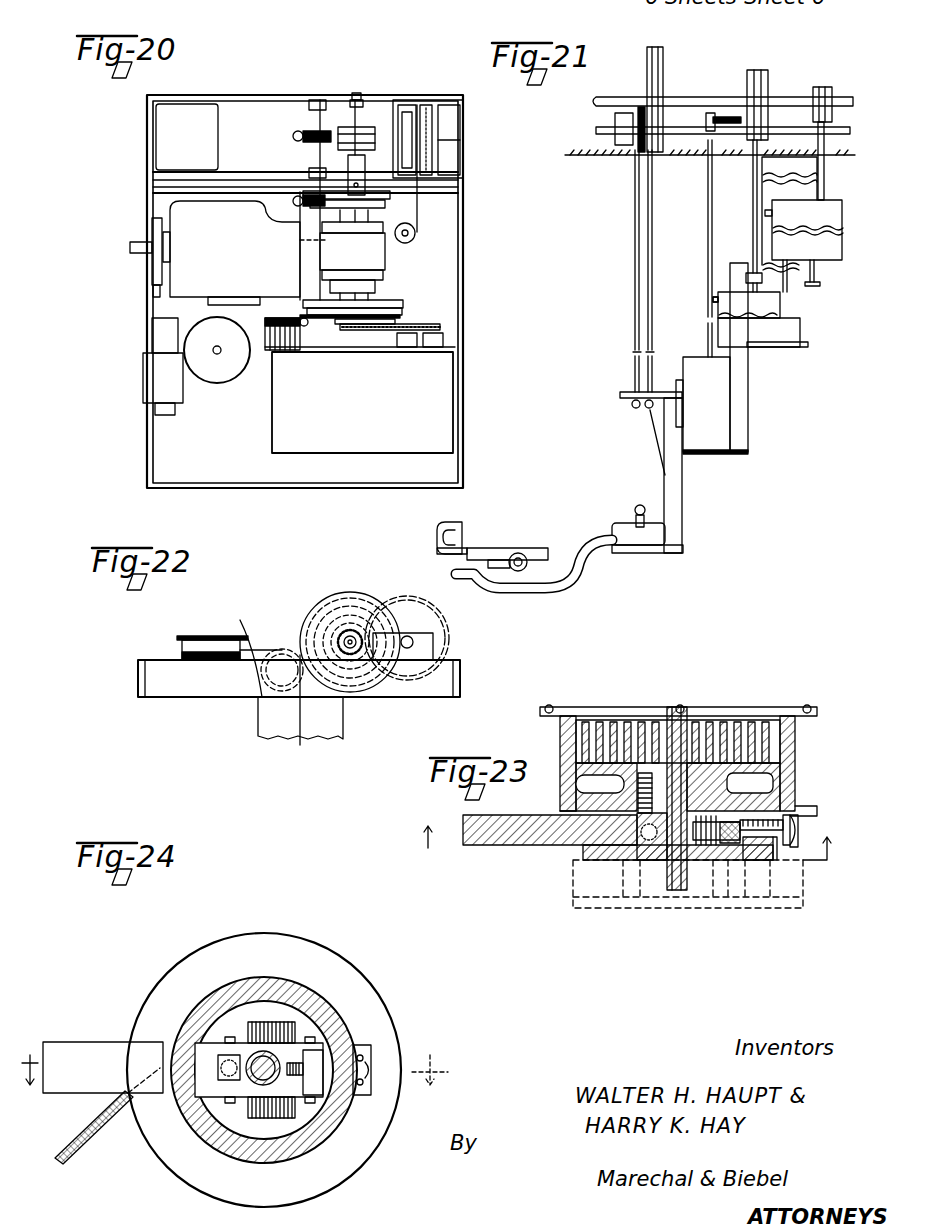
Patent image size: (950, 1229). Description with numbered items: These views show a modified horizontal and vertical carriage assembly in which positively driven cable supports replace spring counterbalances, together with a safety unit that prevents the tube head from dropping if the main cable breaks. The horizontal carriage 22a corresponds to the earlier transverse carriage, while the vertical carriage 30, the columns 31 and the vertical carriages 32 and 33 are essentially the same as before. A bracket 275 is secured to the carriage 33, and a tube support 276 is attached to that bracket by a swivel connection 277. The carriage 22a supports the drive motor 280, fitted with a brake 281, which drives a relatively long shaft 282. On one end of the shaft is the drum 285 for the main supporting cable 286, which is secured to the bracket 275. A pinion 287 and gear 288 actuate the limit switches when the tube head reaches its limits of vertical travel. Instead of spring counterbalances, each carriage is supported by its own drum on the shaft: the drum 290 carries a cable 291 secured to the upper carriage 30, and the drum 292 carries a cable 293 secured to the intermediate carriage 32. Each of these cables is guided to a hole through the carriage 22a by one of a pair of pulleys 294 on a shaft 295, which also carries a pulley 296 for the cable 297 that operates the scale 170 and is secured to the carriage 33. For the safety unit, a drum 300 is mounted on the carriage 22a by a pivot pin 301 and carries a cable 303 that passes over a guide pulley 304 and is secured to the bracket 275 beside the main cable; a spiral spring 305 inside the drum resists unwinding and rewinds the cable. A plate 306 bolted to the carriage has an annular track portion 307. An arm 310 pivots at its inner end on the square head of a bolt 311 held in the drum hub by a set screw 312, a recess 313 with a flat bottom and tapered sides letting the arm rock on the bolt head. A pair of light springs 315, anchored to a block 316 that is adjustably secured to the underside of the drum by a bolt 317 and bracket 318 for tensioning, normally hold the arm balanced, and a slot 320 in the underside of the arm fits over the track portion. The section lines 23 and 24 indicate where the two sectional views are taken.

In FIG. 20, the horizontal carriage 22a is at (160, 450).
In FIG. 22, the horizontal carriage 22a is at (160, 685).
In FIG. 23, the horizontal carriage 22a is at (573, 895).
In FIG. 24, the section line 23— 23 is at (244, 1090).
In FIG. 23, the section line 24— 24 is at (615, 854).
In FIG. 21, the vertical carriage 30 is at (795, 322).
In FIG. 22, the vertical carriage 30 is at (258, 730).
In FIG. 21, the column 31 is at (768, 194).
In FIG. 21, the intermediate vertical carriage 32 is at (740, 405).
In FIG. 21, the carriage 33 is at (700, 452).
In FIG. 20, the scale 170 is at (442, 105).
In FIG. 21, the bracket 275 is at (620, 396).
In FIG. 21, the tube support 276 is at (590, 588).
In FIG. 21, the swivel connection 277 is at (648, 548).
In FIG. 20, the drive motor 280 is at (178, 216).
In FIG. 20, the brake 281 is at (150, 263).
In FIG. 20, the shaft 282 is at (355, 127).
In FIG. 21, the shaft 282 is at (594, 102).
In FIG. 20, the drum 285 is at (400, 304).
In FIG. 21, the drum 285 is at (665, 72).
In FIG. 22, the drum 285 is at (345, 592).
In FIG. 21, the cable 286 is at (648, 300).
In FIG. 20, the pinion 287 is at (355, 330).
In FIG. 22, the pinion 287 is at (355, 633).
In FIG. 20, the gear 288 is at (440, 330).
In FIG. 22, the gear 288 is at (435, 625).
In FIG. 20, the drum 290 is at (375, 135).
In FIG. 21, the drum 290 is at (832, 98).
In FIG. 22, the drum 290 is at (320, 602).
In FIG. 20, the cable 291 is at (330, 135).
In FIG. 21, the cable 291 is at (821, 118).
In FIG. 20, the drum 292 is at (375, 201).
In FIG. 21, the drum 292 is at (770, 95).
In FIG. 22, the drum 292 is at (318, 618).
In FIG. 20, the cable 293 is at (375, 212).
In FIG. 21, the cable 293 is at (752, 225).
In FIG. 20, the pulleys 294 is at (300, 198).
In FIG. 20, the shaft 295 is at (318, 128).
In FIG. 21, the shaft 295 is at (710, 125).
In FIG. 21, the pulley 296 is at (706, 135).
In FIG. 20, the cable 297 is at (395, 192).
In FIG. 21, the cable 297 is at (708, 276).
In FIG. 20, the drum 300 is at (217, 380).
In FIG. 22, the drum 300 is at (200, 640).
In FIG. 23, the drum 300 is at (566, 712).
In FIG. 24, the drum 300 is at (172, 986).
In FIG. 23, the pivot pin 301 is at (688, 722).
In FIG. 24, the pivot pin 301 is at (246, 1040).
In FIG. 20, the cable 303 is at (256, 322).
In FIG. 21, the cable 303 is at (637, 365).
In FIG. 22, the cable 303 is at (255, 660).
In FIG. 24, the cable 303 is at (68, 1166).
In FIG. 20, the guide pulley 304 is at (283, 348).
In FIG. 22, the guide pulley 304 is at (272, 650).
In FIG. 23, the spiral spring 305 is at (640, 725).
In FIG. 23, the plate 306 is at (750, 860).
In FIG. 23, the annular track portion 307 is at (776, 845).
In FIG. 24, the annular track portion 307 is at (300, 1098).
In FIG. 23, the arm 310 is at (485, 845).
In FIG. 24, the arm 310 is at (88, 1048).
In FIG. 23, the bolt 311 is at (640, 838).
In FIG. 24, the bolt 311 is at (208, 1096).
In FIG. 23, the set screw 312 is at (592, 785).
In FIG. 24, the recess 313 is at (320, 1106).
In FIG. 23, the light springs 315 is at (700, 848).
In FIG. 24, the light springs 315 is at (288, 1036).
In FIG. 23, the block 316 is at (725, 845).
In FIG. 24, the block 316 is at (322, 1062).
In FIG. 23, the bolt 317 is at (745, 820).
In FIG. 24, the bolt 317 is at (352, 1070).
In FIG. 23, the bracket 318 is at (800, 842).
In FIG. 24, the bracket 318 is at (372, 1090).
In FIG. 23, the slot 320 is at (640, 834).
In FIG. 24, the slot 320 is at (212, 1082).